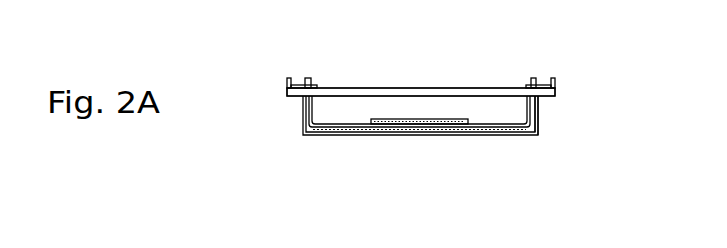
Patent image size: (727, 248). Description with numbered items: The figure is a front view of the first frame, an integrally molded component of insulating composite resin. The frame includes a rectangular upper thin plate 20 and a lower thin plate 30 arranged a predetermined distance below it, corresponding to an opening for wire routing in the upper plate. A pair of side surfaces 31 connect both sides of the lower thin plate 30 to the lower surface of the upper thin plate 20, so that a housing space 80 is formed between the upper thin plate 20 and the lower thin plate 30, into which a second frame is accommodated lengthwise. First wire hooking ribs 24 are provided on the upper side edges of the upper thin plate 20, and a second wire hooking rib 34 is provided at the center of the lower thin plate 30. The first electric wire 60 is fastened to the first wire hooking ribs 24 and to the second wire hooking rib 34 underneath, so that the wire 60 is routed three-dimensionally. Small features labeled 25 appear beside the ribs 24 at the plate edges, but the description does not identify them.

The upper thin plate 20 is at (495, 88).
The first wire hooking ribs 24 is at (308, 77).
The side flange 25 is at (288, 78).
The lower thin plate 30 is at (505, 136).
The side surfaces 31 is at (539, 110).
The second wire hooking rib 34 is at (378, 119).
The first electric wire 60 is at (316, 117).
The housing space 80 is at (431, 106).